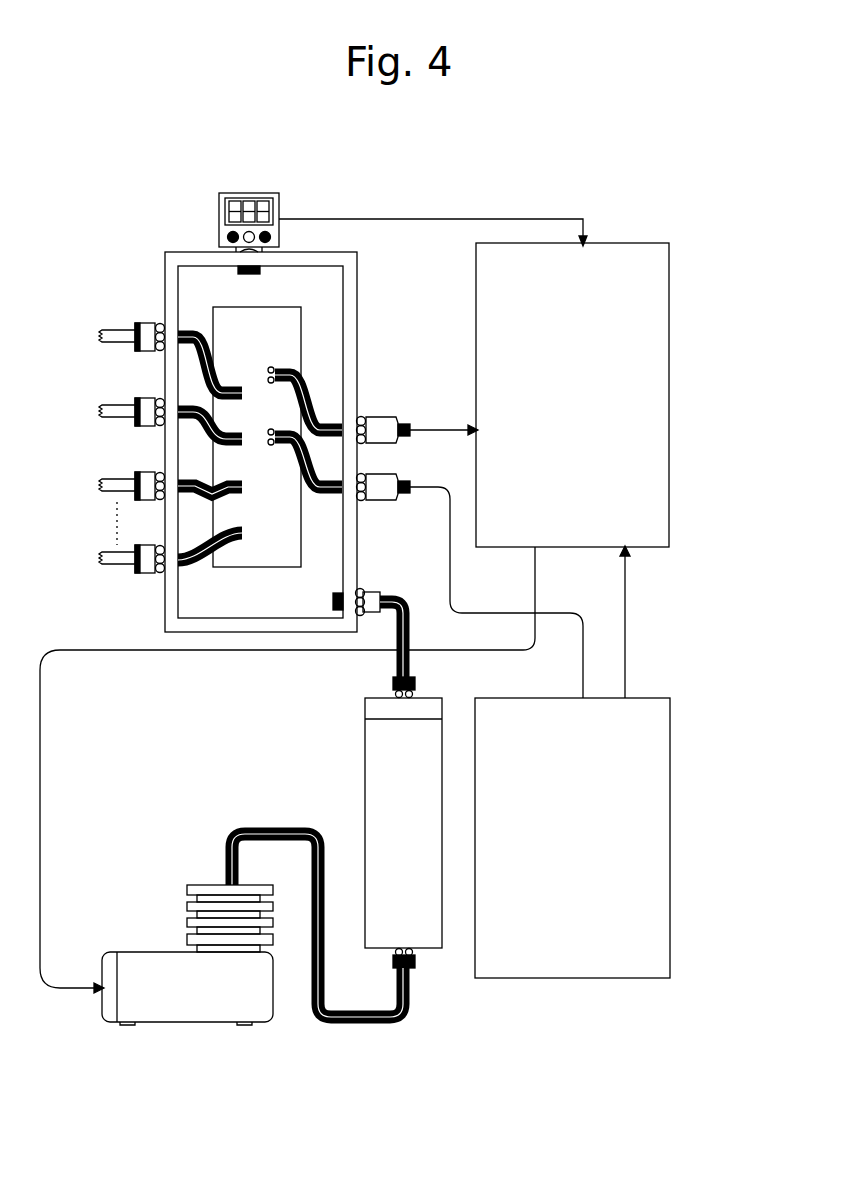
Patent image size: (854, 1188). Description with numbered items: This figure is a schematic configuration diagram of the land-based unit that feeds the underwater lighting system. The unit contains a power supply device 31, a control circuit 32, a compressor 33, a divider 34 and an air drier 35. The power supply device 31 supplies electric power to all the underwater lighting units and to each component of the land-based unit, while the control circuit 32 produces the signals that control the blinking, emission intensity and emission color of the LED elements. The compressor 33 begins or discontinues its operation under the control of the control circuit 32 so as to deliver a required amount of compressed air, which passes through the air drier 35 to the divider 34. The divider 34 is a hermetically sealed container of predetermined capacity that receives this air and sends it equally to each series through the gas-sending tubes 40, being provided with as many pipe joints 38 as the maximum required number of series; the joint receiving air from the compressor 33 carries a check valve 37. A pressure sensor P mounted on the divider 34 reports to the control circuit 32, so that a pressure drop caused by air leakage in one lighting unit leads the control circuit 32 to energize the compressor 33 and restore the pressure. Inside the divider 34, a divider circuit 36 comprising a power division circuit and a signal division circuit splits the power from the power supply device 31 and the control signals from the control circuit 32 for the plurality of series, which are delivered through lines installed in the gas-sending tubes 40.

The pressure sensor P is at (263, 192).
The power supply device 31 is at (670, 759).
The control circuit 32 is at (670, 324).
The compressor 33 is at (137, 950).
The divider 34 is at (352, 288).
The air drier 35 is at (365, 773).
The divider circuit 36 is at (282, 350).
The check valve 37 is at (361, 590).
The pipe joints 38 is at (152, 326).
The gas-sending tube 40 is at (108, 328).